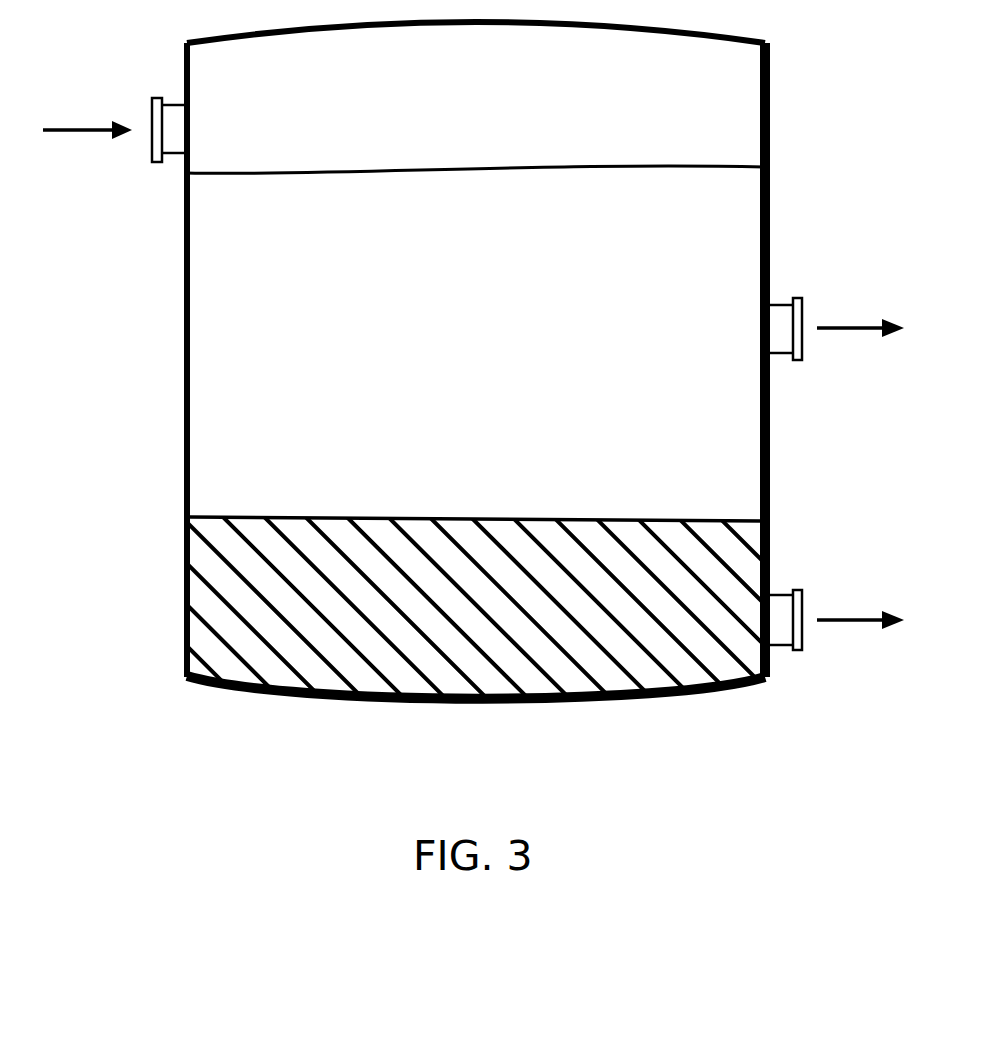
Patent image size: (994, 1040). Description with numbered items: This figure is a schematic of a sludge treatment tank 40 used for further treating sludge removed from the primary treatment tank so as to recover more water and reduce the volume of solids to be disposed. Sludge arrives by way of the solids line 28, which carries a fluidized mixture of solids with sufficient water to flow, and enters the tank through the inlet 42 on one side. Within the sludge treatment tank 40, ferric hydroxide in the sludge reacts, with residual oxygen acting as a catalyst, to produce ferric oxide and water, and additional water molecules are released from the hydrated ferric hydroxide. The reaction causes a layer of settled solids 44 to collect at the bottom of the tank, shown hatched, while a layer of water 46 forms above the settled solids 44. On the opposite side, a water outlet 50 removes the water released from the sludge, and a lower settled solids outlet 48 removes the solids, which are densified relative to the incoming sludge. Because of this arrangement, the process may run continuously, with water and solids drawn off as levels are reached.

The solids line 28 is at (90, 132).
The sludge treatment tank 40 is at (768, 145).
The inlet 42 is at (157, 162).
The settled solids 44 is at (232, 584).
The water 46 is at (253, 375).
The settled solids outlet 48 is at (792, 648).
The water outlet 50 is at (790, 352).